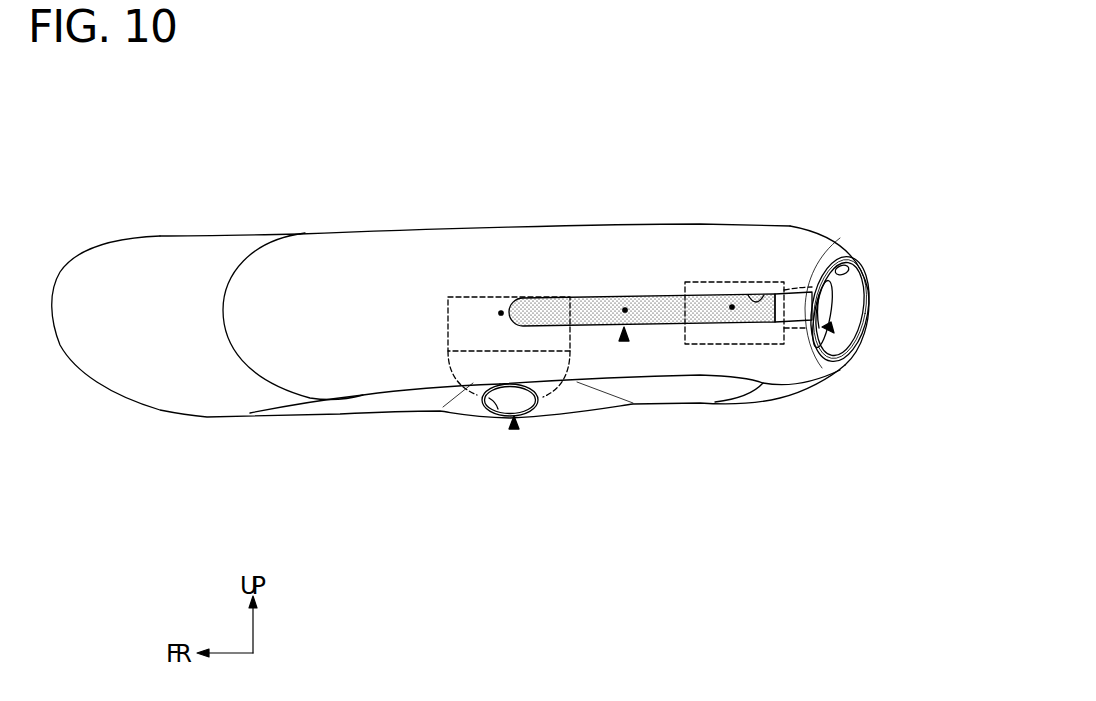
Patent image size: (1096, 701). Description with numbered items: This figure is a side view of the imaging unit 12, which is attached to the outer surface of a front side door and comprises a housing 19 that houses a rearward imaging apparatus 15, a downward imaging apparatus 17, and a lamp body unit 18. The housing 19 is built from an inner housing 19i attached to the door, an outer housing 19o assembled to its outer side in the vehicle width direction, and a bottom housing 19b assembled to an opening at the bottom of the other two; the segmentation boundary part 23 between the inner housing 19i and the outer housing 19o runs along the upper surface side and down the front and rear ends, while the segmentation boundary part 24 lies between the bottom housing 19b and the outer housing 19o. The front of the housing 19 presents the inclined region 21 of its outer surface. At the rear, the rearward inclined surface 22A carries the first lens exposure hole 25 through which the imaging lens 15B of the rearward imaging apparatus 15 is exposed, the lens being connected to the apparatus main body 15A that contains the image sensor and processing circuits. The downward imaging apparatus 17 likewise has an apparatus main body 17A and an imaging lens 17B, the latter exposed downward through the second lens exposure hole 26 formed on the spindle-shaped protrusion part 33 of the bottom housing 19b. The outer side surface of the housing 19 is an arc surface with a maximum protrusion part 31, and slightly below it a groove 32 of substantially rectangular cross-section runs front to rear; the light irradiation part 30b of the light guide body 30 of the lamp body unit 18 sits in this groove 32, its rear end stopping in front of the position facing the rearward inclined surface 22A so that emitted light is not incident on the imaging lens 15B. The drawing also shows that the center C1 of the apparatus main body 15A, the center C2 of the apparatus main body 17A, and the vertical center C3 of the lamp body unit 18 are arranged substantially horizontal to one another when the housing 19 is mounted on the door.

The imaging unit 12 is at (753, 218).
The rearward imaging apparatus 15 is at (828, 331).
The apparatus main body 15A is at (733, 345).
The imaging lens 15B is at (817, 323).
The downward imaging apparatus 17 is at (514, 430).
The apparatus main body 17A is at (467, 297).
The imaging lens 17B is at (525, 404).
The lamp body unit 18 is at (624, 341).
The housing 19 is at (448, 327).
The inner housing 19i is at (233, 240).
The outer housing 19o is at (488, 233).
The bottom housing 19b is at (402, 406).
The inclined region 21 is at (267, 335).
The rearward inclined surface 22A is at (871, 268).
The segmentation boundary part 23 is at (277, 240).
The segmentation boundary part 24 is at (370, 396).
The first lens exposure hole 25 is at (868, 317).
The second lens exposure hole 26 is at (498, 409).
The light guide body 30 is at (665, 323).
The light irradiation part 30b is at (655, 296).
The maximum protrusion part 31 is at (670, 294).
The groove 32 is at (765, 295).
The protrusion part 33 is at (571, 408).
The center of the apparatus main body of the rearward imaging apparatus C1 is at (732, 304).
The center of the apparatus main body of the downward imaging apparatus C2 is at (501, 310).
The center in the vertical direction of the lamp body unit C3 is at (625, 307).